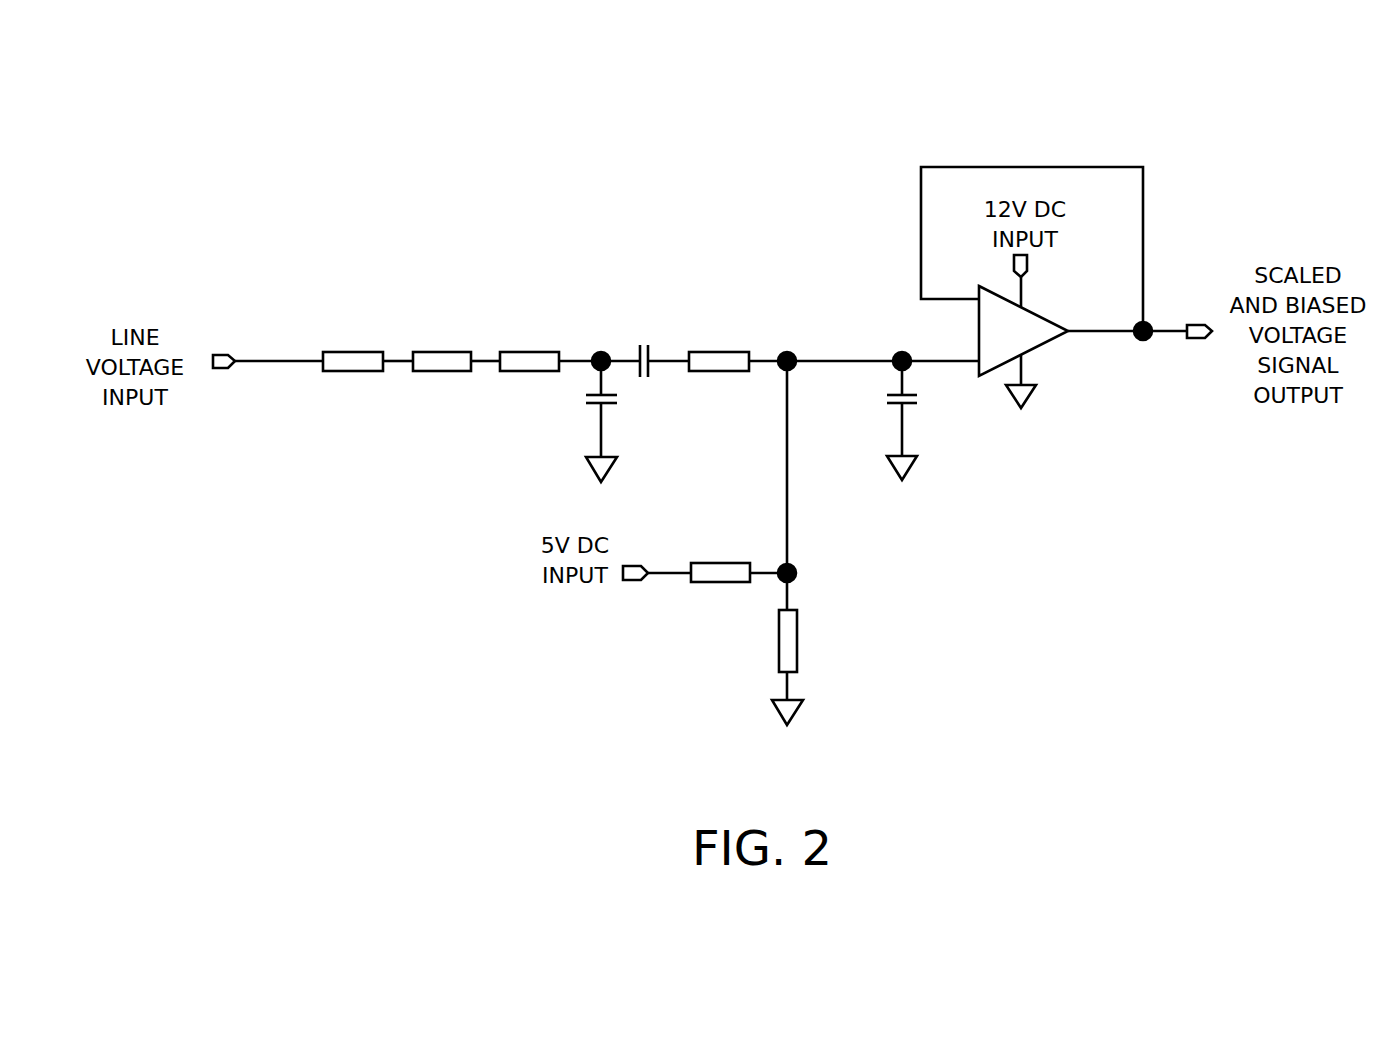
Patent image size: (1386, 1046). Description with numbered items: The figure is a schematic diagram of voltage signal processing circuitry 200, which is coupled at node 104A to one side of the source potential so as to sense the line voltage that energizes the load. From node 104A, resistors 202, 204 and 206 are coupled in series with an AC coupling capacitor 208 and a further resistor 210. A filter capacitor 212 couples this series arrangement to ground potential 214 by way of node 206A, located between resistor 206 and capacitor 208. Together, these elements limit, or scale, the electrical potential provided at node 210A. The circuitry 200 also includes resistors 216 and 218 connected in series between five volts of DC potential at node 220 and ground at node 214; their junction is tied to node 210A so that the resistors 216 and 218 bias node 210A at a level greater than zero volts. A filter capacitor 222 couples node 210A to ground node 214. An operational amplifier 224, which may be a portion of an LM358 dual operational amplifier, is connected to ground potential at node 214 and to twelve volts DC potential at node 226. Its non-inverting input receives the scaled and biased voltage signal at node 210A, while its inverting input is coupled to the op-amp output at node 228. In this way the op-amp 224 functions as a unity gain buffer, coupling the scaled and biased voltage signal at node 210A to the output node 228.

The voltage signal processing circuitry 200 is at (996, 84).
The node 104A is at (224, 368).
The resistor 202 is at (352, 352).
The resistor 204 is at (442, 352).
The resistor 206 is at (530, 352).
The node 206A is at (600, 352).
The AC coupling capacitor 208 is at (640, 350).
The resistor 210 is at (720, 352).
The node 210A is at (901, 352).
The filter capacitor 212 is at (606, 404).
The ground potential 214 is at (586, 465).
The resistor 216 is at (728, 582).
The resistor 218 is at (779, 637).
The node 220 is at (636, 580).
The filter capacitor 222 is at (896, 404).
The operational amplifier 224 is at (1053, 338).
The node 226 is at (1027, 264).
The output node 228 is at (1200, 340).